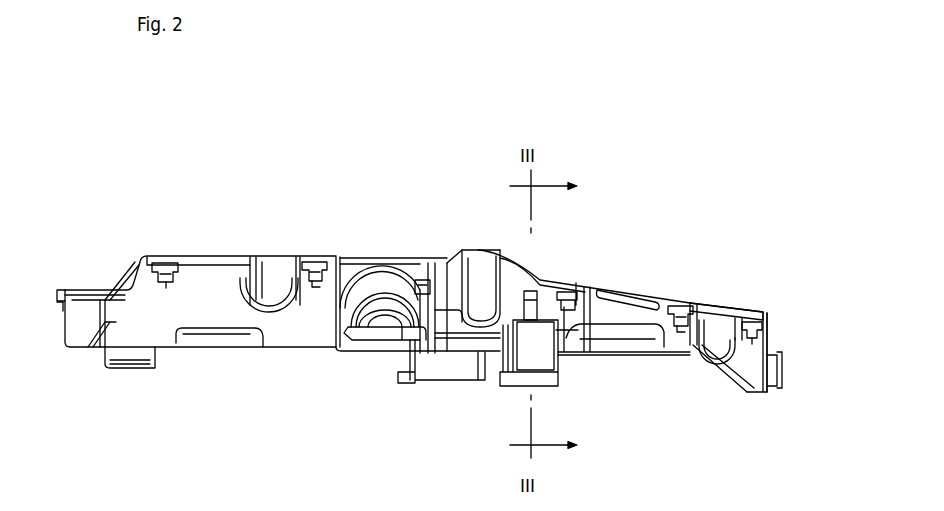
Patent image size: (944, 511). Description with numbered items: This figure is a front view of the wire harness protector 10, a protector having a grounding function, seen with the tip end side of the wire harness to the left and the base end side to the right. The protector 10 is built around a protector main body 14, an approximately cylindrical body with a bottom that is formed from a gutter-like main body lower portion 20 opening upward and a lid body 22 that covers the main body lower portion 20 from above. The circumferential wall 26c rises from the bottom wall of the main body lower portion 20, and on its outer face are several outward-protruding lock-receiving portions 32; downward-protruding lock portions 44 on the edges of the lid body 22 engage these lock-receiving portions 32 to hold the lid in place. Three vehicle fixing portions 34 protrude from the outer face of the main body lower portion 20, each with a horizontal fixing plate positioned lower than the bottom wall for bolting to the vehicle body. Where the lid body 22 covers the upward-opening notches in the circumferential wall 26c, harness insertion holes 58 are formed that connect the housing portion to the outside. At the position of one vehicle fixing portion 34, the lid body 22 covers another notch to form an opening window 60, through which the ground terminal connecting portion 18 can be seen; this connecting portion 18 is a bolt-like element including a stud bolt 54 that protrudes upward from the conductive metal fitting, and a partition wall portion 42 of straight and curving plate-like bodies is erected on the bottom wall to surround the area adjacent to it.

The wire harness protector 10 is at (700, 198).
The protector main body 14 is at (813, 258).
The ground terminal connecting portion 18 is at (545, 303).
The stud bolt 54 is at (567, 296).
The main body lower portion 20 is at (768, 328).
The lid body 22 is at (752, 303).
The circumferential wall 26c is at (218, 302).
The lock-receiving portion 32 is at (58, 291).
The vehicle fixing portion 34 is at (115, 365).
The partition wall portion 42 is at (518, 280).
The lock portion 44 is at (60, 308).
The harness insertion hole 58 is at (272, 262).
The opening window 60 is at (535, 290).